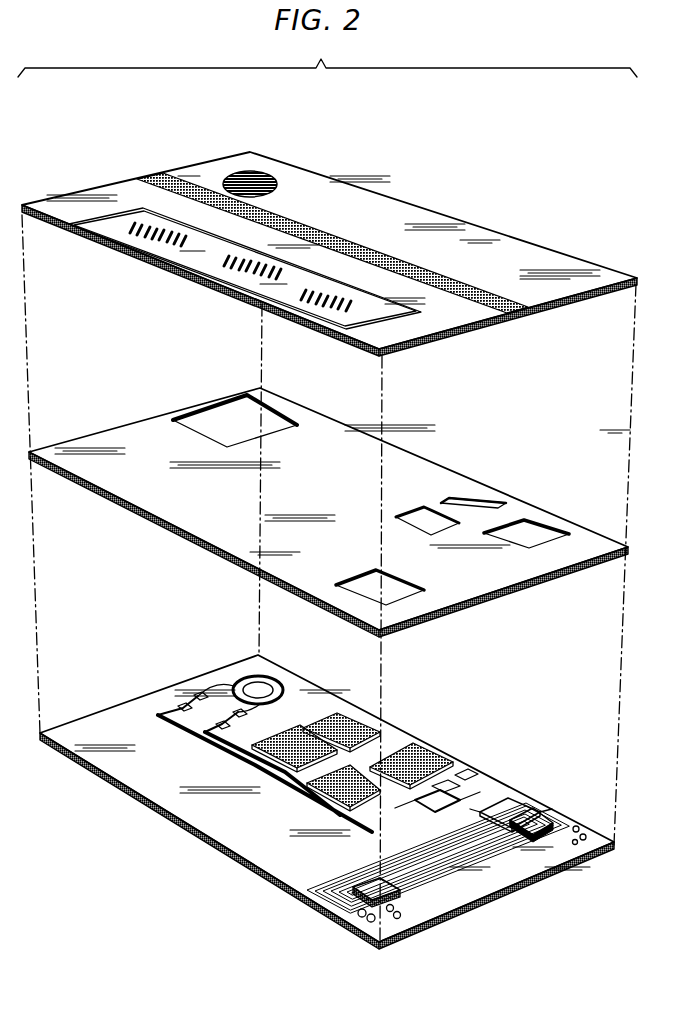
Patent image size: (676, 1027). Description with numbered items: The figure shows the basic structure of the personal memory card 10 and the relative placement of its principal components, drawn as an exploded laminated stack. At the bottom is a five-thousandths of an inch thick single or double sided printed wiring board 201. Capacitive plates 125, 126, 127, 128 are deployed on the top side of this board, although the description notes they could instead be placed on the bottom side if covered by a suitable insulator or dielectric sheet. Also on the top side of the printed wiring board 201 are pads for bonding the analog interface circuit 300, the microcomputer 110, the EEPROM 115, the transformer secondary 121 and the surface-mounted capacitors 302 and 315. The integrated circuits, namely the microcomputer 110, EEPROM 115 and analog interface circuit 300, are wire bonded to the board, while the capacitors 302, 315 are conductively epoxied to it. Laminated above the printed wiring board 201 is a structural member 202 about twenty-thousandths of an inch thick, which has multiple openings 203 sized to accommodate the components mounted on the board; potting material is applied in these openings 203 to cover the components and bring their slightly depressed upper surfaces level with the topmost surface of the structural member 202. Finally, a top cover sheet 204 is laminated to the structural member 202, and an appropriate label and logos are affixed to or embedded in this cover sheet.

The card 10 is at (315, 108).
The microcomputer 110 is at (543, 820).
The EEPROM 115 is at (350, 903).
The transformer secondary 121 is at (247, 683).
The capacitive plate 125 is at (290, 738).
The capacitive plate 126 is at (338, 723).
The capacitive plate 127 is at (310, 800).
The capacitive plate 128 is at (413, 763).
The printed wiring board 201 is at (489, 897).
The structural member 202 is at (506, 593).
The openings 203 is at (266, 397).
The top cover sheet 204 is at (492, 247).
The analog interface circuit 300 is at (503, 810).
The surface-mounted capacitor 302 is at (443, 790).
The surface-mounted capacitor 315 is at (436, 807).